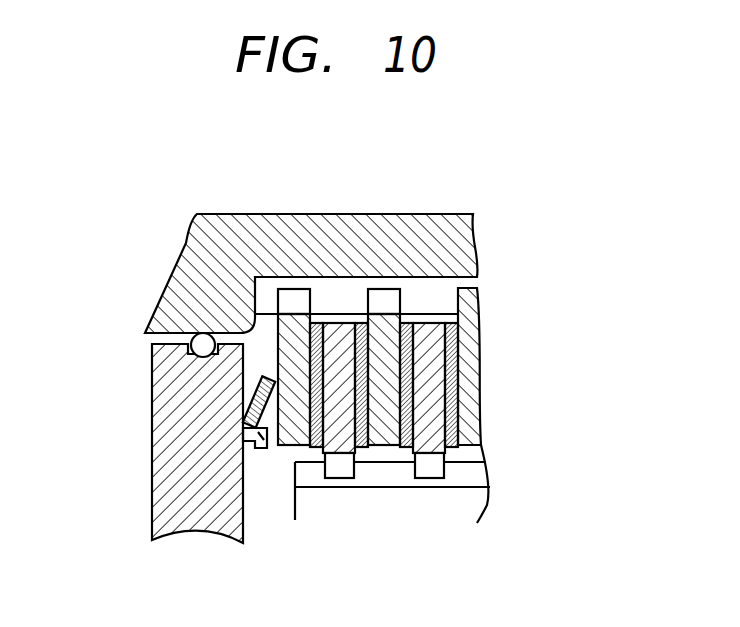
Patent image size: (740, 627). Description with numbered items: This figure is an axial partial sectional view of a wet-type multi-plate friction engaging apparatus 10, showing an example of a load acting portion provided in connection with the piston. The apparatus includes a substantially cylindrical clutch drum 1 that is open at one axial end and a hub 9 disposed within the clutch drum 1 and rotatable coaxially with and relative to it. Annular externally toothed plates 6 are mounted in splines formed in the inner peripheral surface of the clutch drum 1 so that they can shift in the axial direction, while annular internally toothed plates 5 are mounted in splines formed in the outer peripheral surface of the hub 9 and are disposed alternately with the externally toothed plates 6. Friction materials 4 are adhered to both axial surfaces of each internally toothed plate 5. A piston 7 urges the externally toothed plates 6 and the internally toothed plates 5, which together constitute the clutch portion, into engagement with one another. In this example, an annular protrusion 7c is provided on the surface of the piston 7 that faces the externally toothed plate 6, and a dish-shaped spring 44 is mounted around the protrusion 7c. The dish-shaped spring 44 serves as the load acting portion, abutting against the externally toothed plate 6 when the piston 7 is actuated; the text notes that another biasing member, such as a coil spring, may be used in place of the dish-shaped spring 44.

The wet-type multi-plate friction engaging apparatus 10 is at (511, 168).
The clutch drum 1 is at (273, 233).
The externally toothed plate 6 is at (385, 297).
The friction material 4 is at (408, 450).
The internally toothed plate 5 is at (430, 472).
The hub 9 is at (484, 506).
The piston 7 is at (172, 485).
The dish-shaped spring 44 is at (263, 391).
The annular protrusion 7c is at (252, 443).